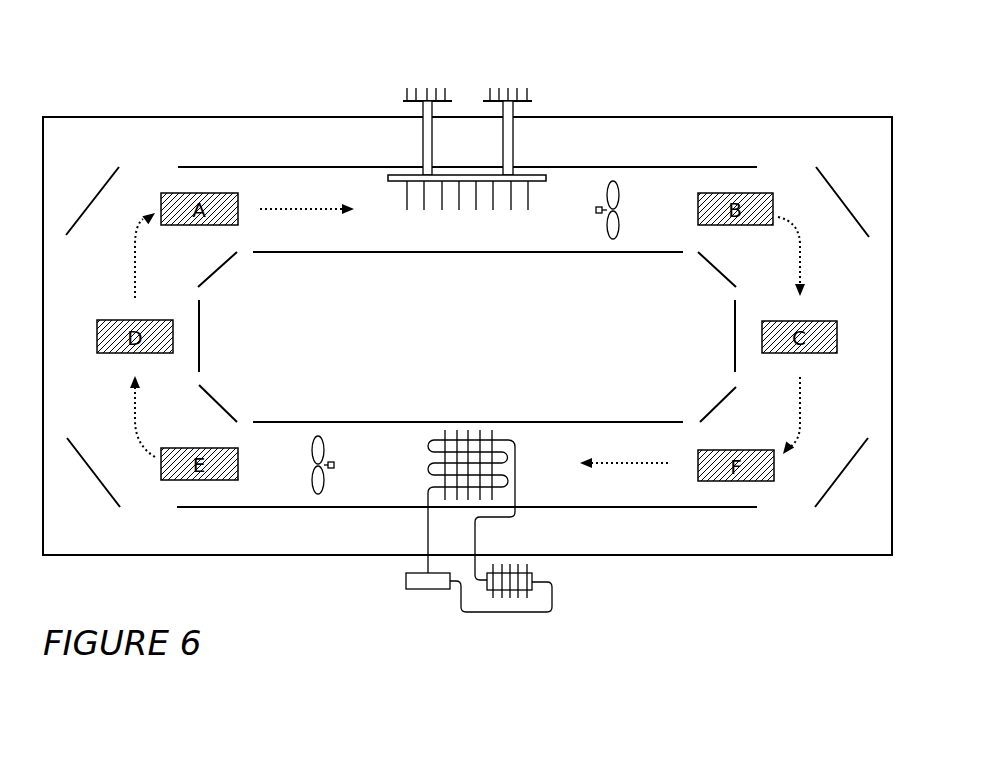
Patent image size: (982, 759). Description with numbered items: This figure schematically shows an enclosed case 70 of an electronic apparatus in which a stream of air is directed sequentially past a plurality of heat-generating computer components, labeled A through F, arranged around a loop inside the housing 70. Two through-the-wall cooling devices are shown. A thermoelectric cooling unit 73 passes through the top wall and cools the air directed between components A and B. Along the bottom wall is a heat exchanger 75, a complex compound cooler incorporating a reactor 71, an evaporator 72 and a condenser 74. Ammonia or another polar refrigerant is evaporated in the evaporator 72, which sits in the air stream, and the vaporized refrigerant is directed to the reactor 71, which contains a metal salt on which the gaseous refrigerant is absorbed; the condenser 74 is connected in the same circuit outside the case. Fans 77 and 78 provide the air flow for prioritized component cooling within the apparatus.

The enclosed case 70 is at (770, 117).
The reactor 71 is at (422, 590).
The evaporator 72 is at (497, 462).
The thermoelectric cooling unit 73 is at (540, 106).
The condenser 74 is at (537, 568).
The heat exchanger 75 is at (449, 612).
The fan 77 is at (619, 190).
The fan 78 is at (313, 484).